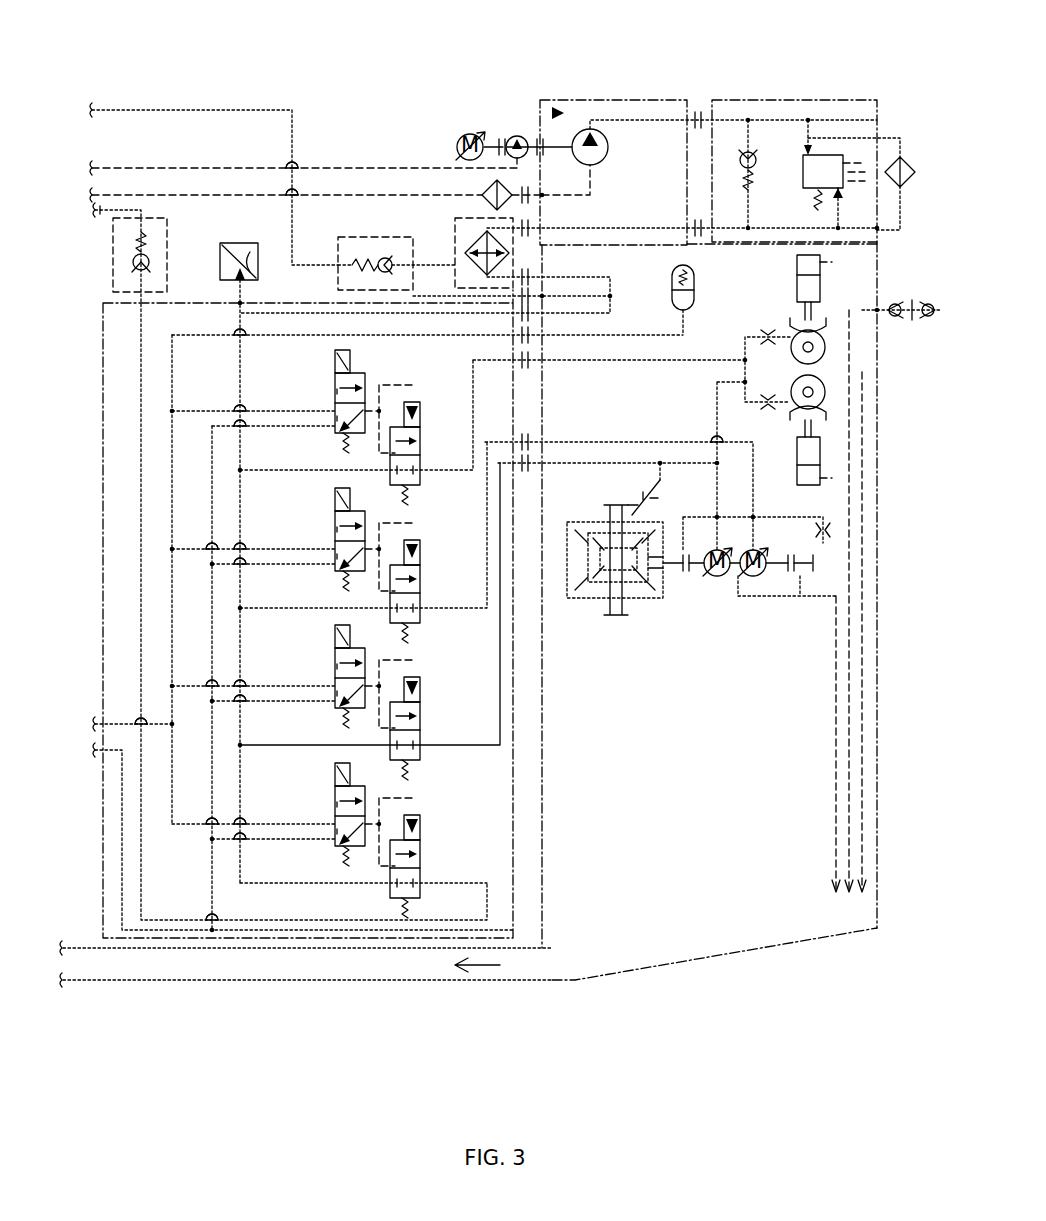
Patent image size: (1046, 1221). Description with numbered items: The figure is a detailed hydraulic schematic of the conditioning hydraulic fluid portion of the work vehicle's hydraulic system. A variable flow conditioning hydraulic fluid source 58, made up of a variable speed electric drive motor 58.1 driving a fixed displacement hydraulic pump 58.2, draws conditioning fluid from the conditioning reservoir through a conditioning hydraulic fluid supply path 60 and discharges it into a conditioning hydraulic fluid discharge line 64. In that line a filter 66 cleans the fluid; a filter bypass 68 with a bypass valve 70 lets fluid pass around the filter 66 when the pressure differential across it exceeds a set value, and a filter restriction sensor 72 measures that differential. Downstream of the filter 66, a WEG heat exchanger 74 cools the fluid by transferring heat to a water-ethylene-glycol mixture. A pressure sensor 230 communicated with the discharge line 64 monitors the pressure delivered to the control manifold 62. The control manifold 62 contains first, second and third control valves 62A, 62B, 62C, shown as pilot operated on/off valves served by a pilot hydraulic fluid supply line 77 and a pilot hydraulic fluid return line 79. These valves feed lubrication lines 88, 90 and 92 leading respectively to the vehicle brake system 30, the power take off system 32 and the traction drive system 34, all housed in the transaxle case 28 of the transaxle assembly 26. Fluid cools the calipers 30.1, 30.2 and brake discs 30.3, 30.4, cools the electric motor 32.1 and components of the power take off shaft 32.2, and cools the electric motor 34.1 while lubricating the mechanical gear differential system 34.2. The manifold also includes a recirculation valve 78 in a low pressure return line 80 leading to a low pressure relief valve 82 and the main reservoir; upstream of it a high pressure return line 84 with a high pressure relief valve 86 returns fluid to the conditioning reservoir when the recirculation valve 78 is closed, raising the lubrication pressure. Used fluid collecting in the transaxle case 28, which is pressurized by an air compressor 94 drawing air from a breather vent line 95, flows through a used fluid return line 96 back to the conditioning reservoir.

The transaxle assembly 26 is at (903, 801).
The transaxle case 28 is at (760, 972).
The vehicle brake system 30 is at (851, 370).
The caliper 30.1 is at (830, 330).
The caliper 30.2 is at (822, 445).
The brake disc 30.3 is at (825, 350).
The brake disc 30.4 is at (825, 395).
The power take off system 32 is at (760, 650).
The electric motor 32.1 is at (745, 582).
The power take off shaft 32.2 is at (796, 585).
The traction drive system 34 is at (642, 585).
The electric motor 34.1 is at (690, 600).
The mechanical gear differential system 34.2 is at (588, 602).
The variable flow conditioning hydraulic fluid source 58 is at (618, 129).
The variable speed electric drive motor 58.1 is at (455, 147).
The fixed displacement hydraulic pump 58.2 is at (600, 162).
The conditioning hydraulic fluid supply path 60 is at (229, 543).
The control manifold 62 is at (278, 614).
The first control valve 62A is at (438, 441).
The second control valve 62B is at (438, 581).
The third control valve 62C is at (438, 719).
The conditioning hydraulic fluid discharge line 64 is at (666, 120).
The filter 66 is at (902, 158).
The filter bypass 68 is at (750, 142).
The bypass valve 70 is at (759, 196).
The filter restriction sensor 72 is at (803, 178).
The WEG heat exchanger 74 is at (468, 230).
The pilot hydraulic fluid supply line 77 is at (97, 716).
The recirculation valve 78 is at (438, 856).
The pilot hydraulic fluid return line 79 is at (97, 760).
The low pressure return line 80 is at (100, 222).
The low pressure relief valve 82 is at (110, 272).
The high pressure return line 84 is at (162, 106).
The high pressure relief valve 86 is at (358, 238).
The lubrication line 88 is at (698, 358).
The lubrication line 90 is at (648, 442).
The lubrication line 92 is at (680, 465).
The air compressor 94 is at (506, 133).
The breather vent line 95 is at (182, 168).
The used fluid return line 96 is at (185, 962).
The pressure sensor 230 is at (240, 244).